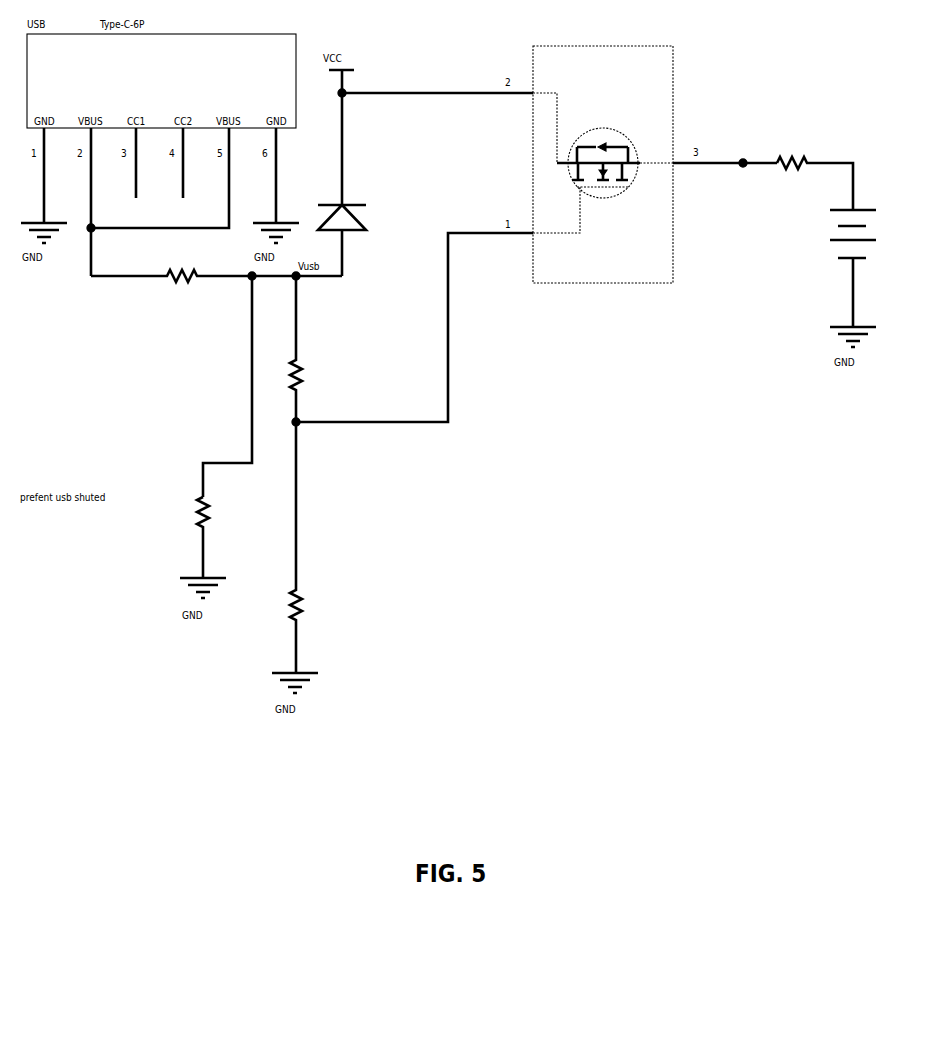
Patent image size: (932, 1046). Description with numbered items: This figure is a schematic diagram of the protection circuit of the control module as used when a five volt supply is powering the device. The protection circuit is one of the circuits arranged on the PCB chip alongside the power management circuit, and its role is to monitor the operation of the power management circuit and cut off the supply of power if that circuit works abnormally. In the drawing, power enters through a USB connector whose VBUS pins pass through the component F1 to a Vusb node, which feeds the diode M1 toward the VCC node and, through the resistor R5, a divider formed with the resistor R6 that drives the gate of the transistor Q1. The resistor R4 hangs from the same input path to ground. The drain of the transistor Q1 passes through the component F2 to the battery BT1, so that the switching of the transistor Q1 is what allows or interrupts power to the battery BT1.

The fuse F1 is at (216, 265).
The fuse F2 is at (808, 176).
The diode M1 is at (356, 240).
The resistor R4 150R R4 is at (215, 534).
The resistor R5 1K R5 is at (306, 349).
The resistor R6 100K R6 is at (308, 547).
The P-channel MOSFET Q1 (2301-P) Q1 is at (603, 165).
The battery BT1 is at (871, 268).